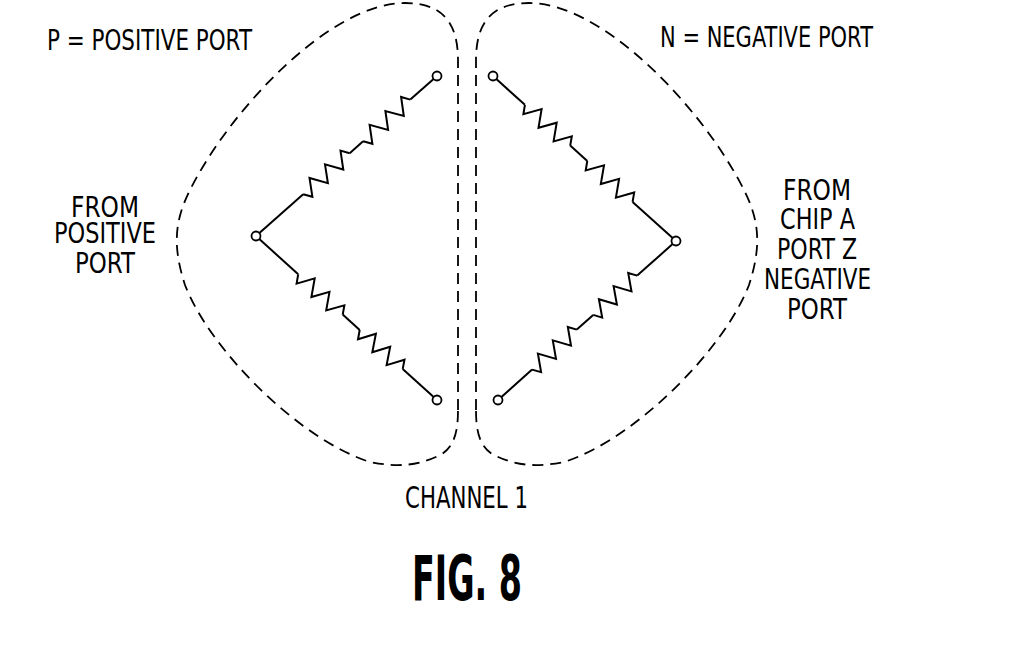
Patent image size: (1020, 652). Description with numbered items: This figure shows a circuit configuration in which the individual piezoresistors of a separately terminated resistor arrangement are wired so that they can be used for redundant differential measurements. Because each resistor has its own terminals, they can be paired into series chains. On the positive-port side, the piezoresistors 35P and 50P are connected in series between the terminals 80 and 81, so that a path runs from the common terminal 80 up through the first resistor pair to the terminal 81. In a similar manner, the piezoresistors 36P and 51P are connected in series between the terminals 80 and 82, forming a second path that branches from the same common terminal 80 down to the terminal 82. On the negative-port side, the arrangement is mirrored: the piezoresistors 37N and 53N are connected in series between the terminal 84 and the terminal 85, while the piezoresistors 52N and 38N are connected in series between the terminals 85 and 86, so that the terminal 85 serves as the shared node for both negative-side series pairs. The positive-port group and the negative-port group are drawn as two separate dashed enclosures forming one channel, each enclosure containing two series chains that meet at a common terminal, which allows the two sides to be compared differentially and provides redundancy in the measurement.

The piezoresistor 35P is at (312, 175).
The piezoresistor 50P is at (370, 116).
The piezoresistor 36P is at (320, 306).
The piezoresistor 51P is at (367, 356).
The piezoresistor 37N is at (550, 112).
The piezoresistor 53N is at (614, 172).
The piezoresistor 52N is at (617, 306).
The piezoresistor 38N is at (556, 364).
The terminal 80 is at (251, 236).
The terminal 81 is at (434, 72).
The terminal 82 is at (433, 406).
The terminal 84 is at (499, 71).
The terminal 85 is at (683, 240).
The terminal 86 is at (502, 407).